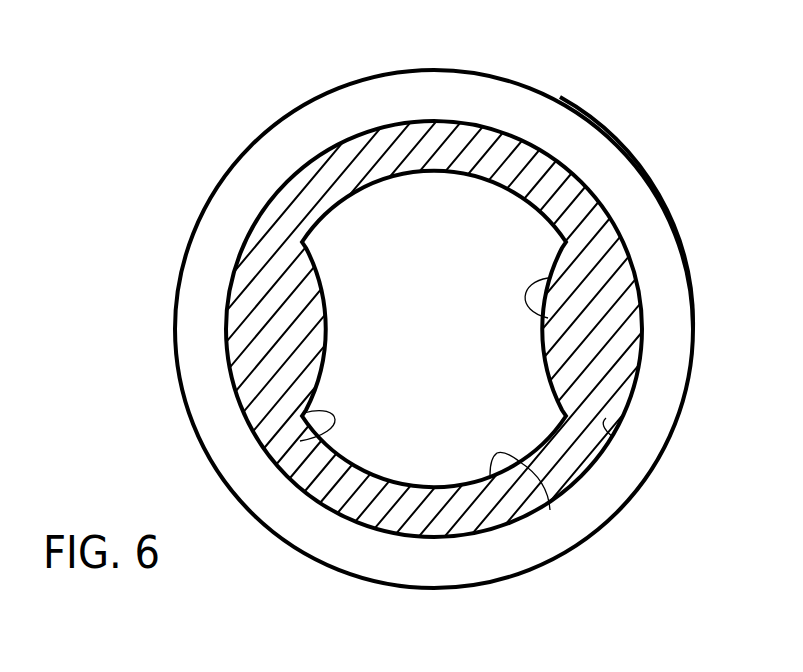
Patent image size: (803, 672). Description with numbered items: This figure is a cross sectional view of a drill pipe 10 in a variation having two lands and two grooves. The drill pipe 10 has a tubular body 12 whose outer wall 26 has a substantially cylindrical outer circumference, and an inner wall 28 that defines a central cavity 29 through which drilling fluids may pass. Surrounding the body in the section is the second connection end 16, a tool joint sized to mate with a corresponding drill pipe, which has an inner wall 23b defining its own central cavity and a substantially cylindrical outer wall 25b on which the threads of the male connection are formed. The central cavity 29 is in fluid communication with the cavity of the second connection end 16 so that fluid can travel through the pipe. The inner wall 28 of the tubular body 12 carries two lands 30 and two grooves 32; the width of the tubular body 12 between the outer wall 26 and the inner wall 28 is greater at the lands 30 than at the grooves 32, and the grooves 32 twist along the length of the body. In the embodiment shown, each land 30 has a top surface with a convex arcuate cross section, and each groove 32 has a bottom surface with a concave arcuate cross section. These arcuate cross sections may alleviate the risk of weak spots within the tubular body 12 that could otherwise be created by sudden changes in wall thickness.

The drill pipe 10 is at (572, 39).
The tubular body 12 is at (403, 336).
The second connection end 16 is at (460, 70).
The inner wall 23b is at (613, 437).
The outer wall 25b is at (610, 137).
The outer wall 26 is at (293, 485).
The inner wall 28 is at (300, 441).
The central cavity 29 is at (362, 263).
The land 30 is at (548, 278).
The groove 32 is at (550, 510).